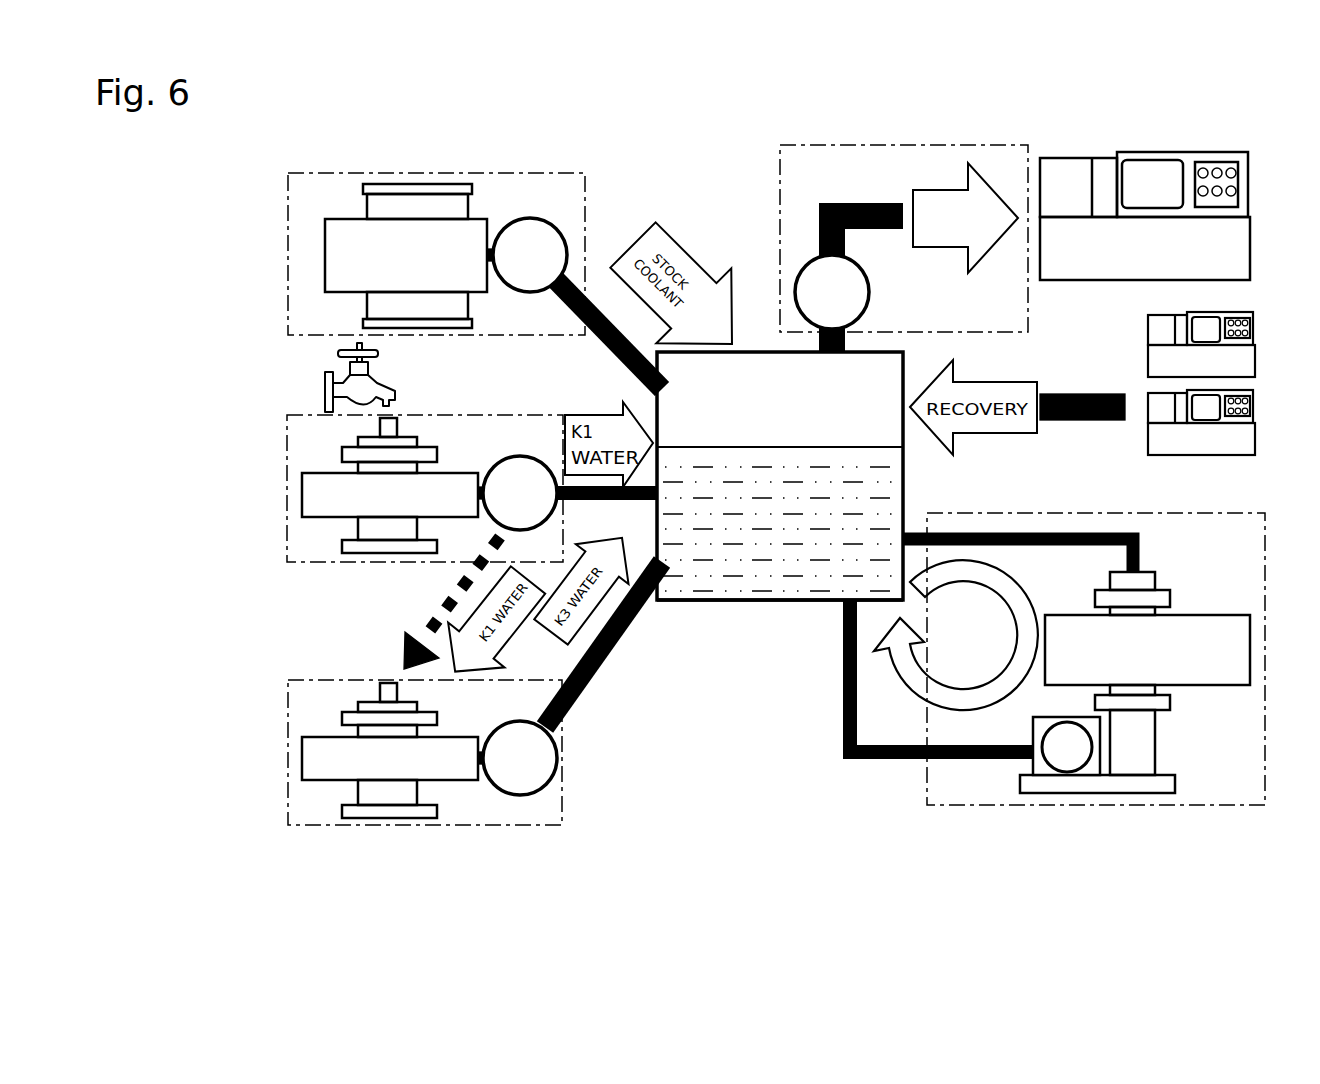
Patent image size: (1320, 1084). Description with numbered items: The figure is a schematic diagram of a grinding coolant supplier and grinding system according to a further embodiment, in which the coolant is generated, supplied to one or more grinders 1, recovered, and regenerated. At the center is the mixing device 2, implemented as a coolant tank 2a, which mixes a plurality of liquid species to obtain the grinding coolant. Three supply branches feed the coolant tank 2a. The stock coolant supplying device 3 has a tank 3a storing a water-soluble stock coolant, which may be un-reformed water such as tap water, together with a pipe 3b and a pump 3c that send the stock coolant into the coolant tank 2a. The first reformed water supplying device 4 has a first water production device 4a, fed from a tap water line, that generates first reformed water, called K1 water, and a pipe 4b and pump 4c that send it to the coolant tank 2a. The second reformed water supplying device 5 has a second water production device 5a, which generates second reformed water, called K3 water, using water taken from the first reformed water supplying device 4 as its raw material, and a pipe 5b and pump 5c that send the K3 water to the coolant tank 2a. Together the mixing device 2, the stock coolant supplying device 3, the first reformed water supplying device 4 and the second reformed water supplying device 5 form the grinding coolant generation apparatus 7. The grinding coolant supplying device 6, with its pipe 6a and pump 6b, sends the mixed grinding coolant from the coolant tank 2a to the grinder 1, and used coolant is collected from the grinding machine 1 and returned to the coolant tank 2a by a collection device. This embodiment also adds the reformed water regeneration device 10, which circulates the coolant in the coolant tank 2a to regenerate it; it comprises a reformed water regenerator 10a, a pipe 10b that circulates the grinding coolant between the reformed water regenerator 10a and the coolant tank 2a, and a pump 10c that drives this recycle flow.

The grinder 1 is at (1083, 150).
The mixing device 2 is at (792, 608).
The coolant tank 2a is at (752, 603).
The stock coolant supplying device 3 is at (361, 172).
The tank 3a is at (428, 198).
The pipe 3b is at (592, 300).
The pump 3c is at (530, 228).
The first reformed water supplying device 4 is at (460, 413).
The first water production device 4a is at (343, 455).
The pipe 4b is at (577, 503).
The pump 4c is at (520, 470).
The second reformed water supplying device 5 is at (343, 677).
The second water production device 5a is at (358, 785).
The pipe 5b is at (583, 681).
The pump 5c is at (527, 777).
The grinding coolant supplying device 6 is at (823, 135).
The pipe 6a is at (865, 203).
The pump 6b is at (810, 277).
The grinding coolant generation apparatus 7 is at (722, 662).
The reformed water regeneration device 10 is at (1233, 808).
The reformed water regenerator 10a is at (1140, 785).
The pipe 10b is at (945, 760).
The pump 10c is at (1070, 768).